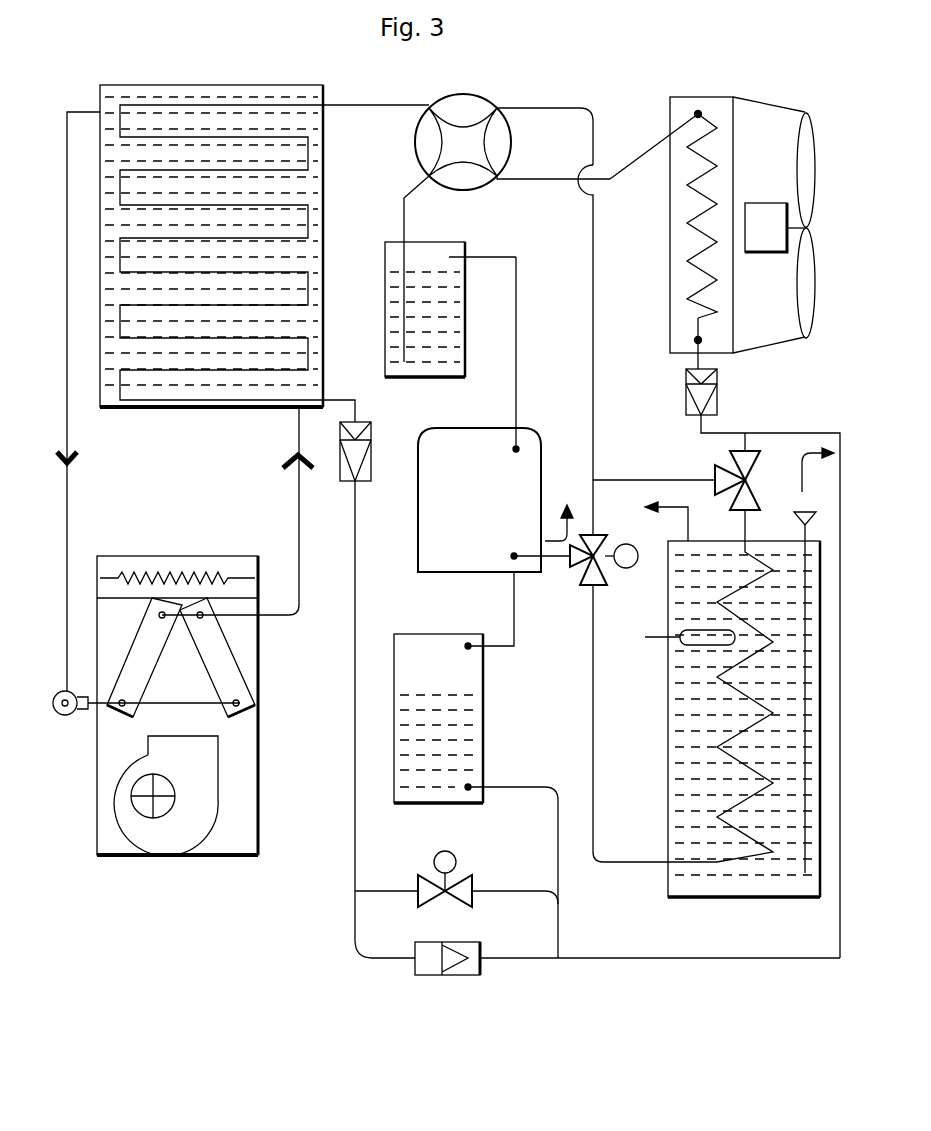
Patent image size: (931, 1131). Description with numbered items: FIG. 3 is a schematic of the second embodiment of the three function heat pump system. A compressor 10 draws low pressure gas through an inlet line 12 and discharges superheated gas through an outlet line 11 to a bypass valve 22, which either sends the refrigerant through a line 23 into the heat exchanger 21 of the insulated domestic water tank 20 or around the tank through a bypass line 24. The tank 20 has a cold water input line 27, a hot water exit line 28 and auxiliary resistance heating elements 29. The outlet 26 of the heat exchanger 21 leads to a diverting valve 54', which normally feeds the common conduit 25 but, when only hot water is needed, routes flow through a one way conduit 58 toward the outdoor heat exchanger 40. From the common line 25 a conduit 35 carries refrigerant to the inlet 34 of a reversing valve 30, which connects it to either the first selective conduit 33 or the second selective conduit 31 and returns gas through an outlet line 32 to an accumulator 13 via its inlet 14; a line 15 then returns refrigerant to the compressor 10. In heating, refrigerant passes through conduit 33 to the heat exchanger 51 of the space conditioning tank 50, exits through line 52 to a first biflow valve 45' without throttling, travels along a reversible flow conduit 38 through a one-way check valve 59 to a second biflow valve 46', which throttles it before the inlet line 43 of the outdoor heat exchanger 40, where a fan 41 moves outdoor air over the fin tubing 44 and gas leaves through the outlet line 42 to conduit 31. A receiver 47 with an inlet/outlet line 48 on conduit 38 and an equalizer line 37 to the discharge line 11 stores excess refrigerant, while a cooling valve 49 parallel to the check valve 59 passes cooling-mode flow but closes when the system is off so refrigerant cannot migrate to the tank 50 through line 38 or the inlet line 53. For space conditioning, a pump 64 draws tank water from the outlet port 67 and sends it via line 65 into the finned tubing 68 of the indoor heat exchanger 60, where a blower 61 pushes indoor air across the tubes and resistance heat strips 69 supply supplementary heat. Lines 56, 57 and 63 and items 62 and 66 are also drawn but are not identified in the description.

The compressor 10 is at (448, 569).
The outlet line 11 is at (530, 550).
The inlet line 12 is at (516, 384).
The accumulator 13 is at (455, 372).
The inlet 14 is at (404, 205).
The line 15 is at (495, 243).
The domestic water tank 20 is at (762, 884).
The domestic water heat exchanger 21 is at (775, 744).
The bypass valve 22 is at (612, 585).
The line 23 is at (620, 864).
The bypass line 24 is at (592, 462).
The common conduit 25 is at (676, 474).
The outlet line 26 is at (745, 528).
The cold water input line 27 is at (818, 692).
The hot water exit line 28 is at (656, 522).
The resistance heating elements 29 is at (690, 650).
The reversing valve 30 is at (478, 154).
The second selective conduit 31 is at (553, 190).
The outlet line 32 is at (409, 179).
The first selective conduit 33 is at (406, 96).
The inlet 34 is at (545, 123).
The conduit 35 is at (590, 366).
The equalizer line 37 is at (491, 623).
The reversible flow conduit 38 is at (352, 700).
The outdoor heat exchanger 40 is at (668, 268).
The fan 41 is at (778, 252).
The outlet line 42 is at (656, 145).
The inlet line 43 is at (680, 344).
The fin passages or tubing 44 is at (690, 228).
The first biflow valve 45' is at (368, 466).
The second biflow valve 46' is at (723, 392).
The receiver 47 is at (472, 778).
The inlet/outlet line 48 is at (530, 796).
The cooling valve 49 is at (457, 862).
The space conditioning tank 50 is at (166, 414).
The space conditioning heat exchanger 51 is at (234, 241).
The line 52 is at (360, 404).
The inlet line 53 is at (357, 98).
The diverting valve 54' is at (757, 480).
The water pipe 56 is at (70, 98).
The water pipe 57 is at (282, 463).
The one way conduit 58 is at (748, 444).
The one-way check valve 59 is at (448, 975).
The indoor heat exchanger 60 is at (96, 820).
The blower 61 is at (166, 796).
The pump 62 is at (90, 702).
The pipe 63 is at (300, 566).
The pump 64 is at (80, 719).
The line 65 is at (70, 626).
The bottom wall 66 is at (177, 871).
The outlet port 67 is at (177, 559).
The finned tubing array 68 is at (181, 657).
The resistance heat strips 69 is at (118, 570).